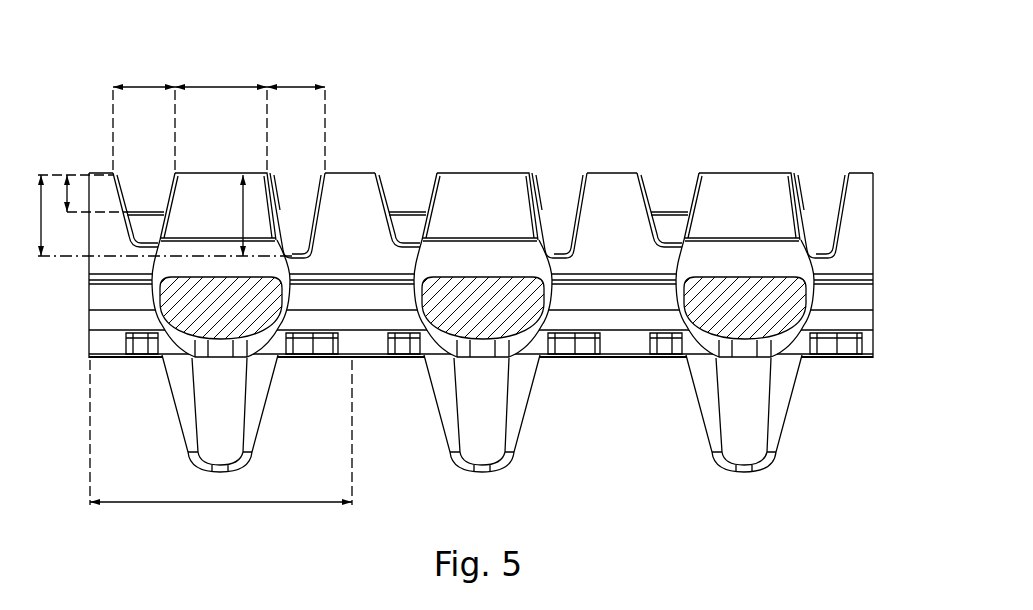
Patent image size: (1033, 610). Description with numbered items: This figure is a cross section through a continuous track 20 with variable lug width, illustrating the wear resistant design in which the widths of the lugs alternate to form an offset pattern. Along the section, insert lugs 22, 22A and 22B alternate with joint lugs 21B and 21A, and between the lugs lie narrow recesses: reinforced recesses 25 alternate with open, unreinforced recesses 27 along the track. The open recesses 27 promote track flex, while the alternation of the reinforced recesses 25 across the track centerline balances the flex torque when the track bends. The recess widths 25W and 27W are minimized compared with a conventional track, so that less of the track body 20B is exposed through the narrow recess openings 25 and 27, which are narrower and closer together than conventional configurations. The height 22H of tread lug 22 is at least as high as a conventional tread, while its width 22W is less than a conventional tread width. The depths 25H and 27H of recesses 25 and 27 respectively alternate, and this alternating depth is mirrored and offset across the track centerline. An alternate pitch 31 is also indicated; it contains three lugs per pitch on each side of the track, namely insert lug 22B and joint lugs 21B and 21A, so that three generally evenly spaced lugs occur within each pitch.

The track 20 is at (737, 105).
The track body 20B is at (612, 300).
The joint lug 21A is at (598, 209).
The joint lug 21B is at (336, 211).
The insert lug 22 is at (194, 213).
The insert lug 22A is at (467, 211).
The insert lug 22B is at (729, 209).
The height 22H is at (243, 196).
The width 22W is at (223, 86).
The reinforced recess 25 is at (408, 205).
The depth 25H is at (67, 190).
The recess width 25W is at (141, 84).
The recess 27 is at (559, 217).
The depth 27H is at (43, 246).
The recess width 27W is at (298, 86).
The alternate pitch 31 is at (316, 503).